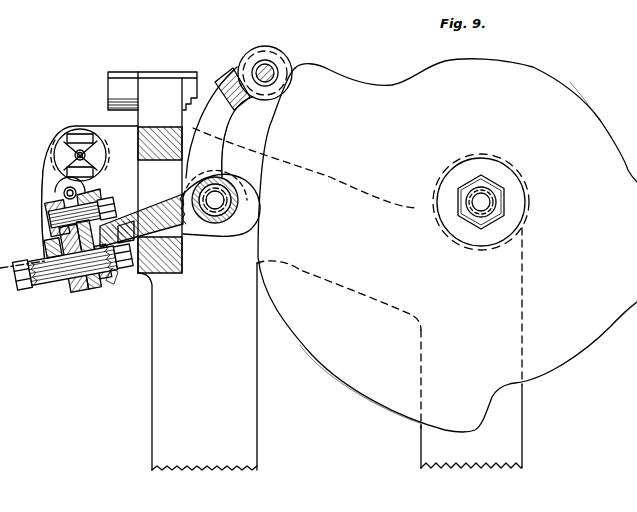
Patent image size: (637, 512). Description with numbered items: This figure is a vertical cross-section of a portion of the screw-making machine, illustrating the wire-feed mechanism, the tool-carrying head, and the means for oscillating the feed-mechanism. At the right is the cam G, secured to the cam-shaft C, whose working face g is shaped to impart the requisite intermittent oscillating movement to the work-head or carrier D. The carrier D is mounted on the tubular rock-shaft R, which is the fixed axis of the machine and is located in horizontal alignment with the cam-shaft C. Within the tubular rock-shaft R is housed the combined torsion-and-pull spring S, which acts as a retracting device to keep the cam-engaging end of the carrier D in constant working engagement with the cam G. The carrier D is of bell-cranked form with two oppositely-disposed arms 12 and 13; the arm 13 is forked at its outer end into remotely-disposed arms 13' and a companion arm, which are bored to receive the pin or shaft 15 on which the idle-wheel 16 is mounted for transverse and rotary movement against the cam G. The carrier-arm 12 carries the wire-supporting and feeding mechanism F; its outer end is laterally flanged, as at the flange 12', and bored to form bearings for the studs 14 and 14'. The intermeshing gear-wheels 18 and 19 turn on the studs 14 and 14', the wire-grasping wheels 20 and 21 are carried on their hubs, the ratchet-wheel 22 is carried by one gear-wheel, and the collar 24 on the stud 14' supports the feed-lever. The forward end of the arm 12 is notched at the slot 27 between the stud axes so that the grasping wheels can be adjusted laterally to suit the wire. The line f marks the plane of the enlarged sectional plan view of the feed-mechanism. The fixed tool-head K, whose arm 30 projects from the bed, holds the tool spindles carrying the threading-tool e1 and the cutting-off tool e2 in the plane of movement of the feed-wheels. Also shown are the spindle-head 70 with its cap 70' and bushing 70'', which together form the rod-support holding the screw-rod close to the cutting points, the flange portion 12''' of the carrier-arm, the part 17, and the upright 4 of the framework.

The cam G is at (415, 263).
The cam periphery g is at (583, 100).
The cam-shaft C is at (481, 202).
The upright 4 is at (199, 367).
The carrier-arm 12 is at (152, 172).
The tool-head K is at (90, 184).
The arm of the tool-head 30 is at (48, 165).
The spindle-head 70 is at (69, 155).
The cap 70' is at (65, 130).
The bushing 70'' is at (104, 156).
The cutting-off tool e2 is at (97, 148).
The wire-grasping wheel 20 is at (58, 188).
The threading-tool e1 is at (62, 193).
The work-head or carrier D is at (180, 210).
The slot 27 is at (118, 226).
The flange 12' is at (105, 186).
The stud 14 is at (66, 215).
The gear-wheel 18 is at (50, 204).
The collar 24 is at (64, 296).
The ratchet-wheel 22 is at (72, 300).
The gear-wheel 19 is at (85, 296).
The wire-grasping wheel 21 is at (96, 290).
The wire-supporting and feeding mechanism F is at (31, 253).
The stud 14' is at (118, 295).
The bracket lug 12''' is at (134, 262).
The rock-shaft R is at (238, 206).
The combined torsion-and-pull spring S is at (228, 184).
The section line f- f is at (215, 202).
The arm 13 is at (219, 122).
The forked arm 13' is at (232, 74).
The link arm 17 is at (273, 114).
The idle-wheel 16 is at (290, 62).
The pin or shaft 15 is at (266, 66).